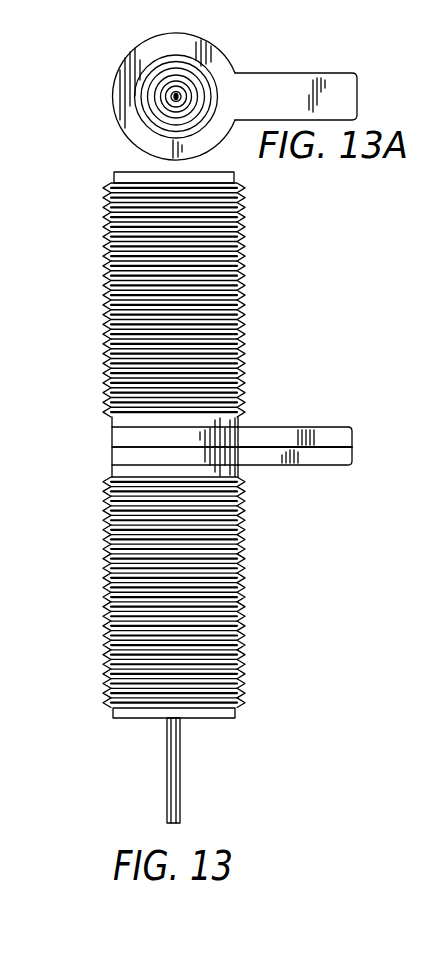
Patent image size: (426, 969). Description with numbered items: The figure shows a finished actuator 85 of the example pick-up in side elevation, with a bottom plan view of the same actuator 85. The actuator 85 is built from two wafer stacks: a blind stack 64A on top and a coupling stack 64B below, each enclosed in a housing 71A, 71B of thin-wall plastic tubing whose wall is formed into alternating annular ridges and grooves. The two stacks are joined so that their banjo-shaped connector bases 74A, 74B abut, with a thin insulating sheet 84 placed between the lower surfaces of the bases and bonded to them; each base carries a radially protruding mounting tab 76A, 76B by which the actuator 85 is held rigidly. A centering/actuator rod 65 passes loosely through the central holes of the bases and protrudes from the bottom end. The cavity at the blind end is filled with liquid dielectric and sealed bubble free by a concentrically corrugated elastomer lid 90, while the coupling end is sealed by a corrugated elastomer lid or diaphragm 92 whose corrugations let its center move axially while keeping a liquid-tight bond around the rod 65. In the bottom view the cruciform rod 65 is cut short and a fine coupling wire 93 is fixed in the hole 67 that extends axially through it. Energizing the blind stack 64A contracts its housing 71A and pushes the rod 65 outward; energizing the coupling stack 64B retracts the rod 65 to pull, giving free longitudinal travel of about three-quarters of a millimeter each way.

In FIG. 13, the blind stack 64A is at (221, 305).
In FIG. 13, the coupling stack 64B is at (225, 592).
In FIG. 13A, the centering/actuator rod 65 is at (172, 92).
In FIG. 13, the centering/actuator rod 65 is at (167, 765).
In FIG. 13A, the hole 67 is at (172, 103).
In FIG. 13, the housing 71A is at (244, 268).
In FIG. 13, the housing 71B is at (240, 600).
In FIG. 13, the connector base 74A is at (110, 443).
In FIG. 13A, the connector base 74B is at (323, 86).
In FIG. 13, the connector base 74B is at (110, 457).
In FIG. 13, the mounting tab 76A is at (298, 427).
In FIG. 13, the mounting tab 76B is at (275, 465).
In FIG. 13, the insulating sheet 84 is at (352, 447).
In FIG. 13, the actuator 85 is at (268, 254).
In FIG. 13, the concentrically corrugated elastomer lid 90 is at (118, 172).
In FIG. 13A, the end cap / corrugated elastomer diaphragm 92 is at (233, 58).
In FIG. 13, the end cap / corrugated elastomer diaphragm 92 is at (227, 718).
In FIG. 13A, the coupling wire 93 is at (181, 101).